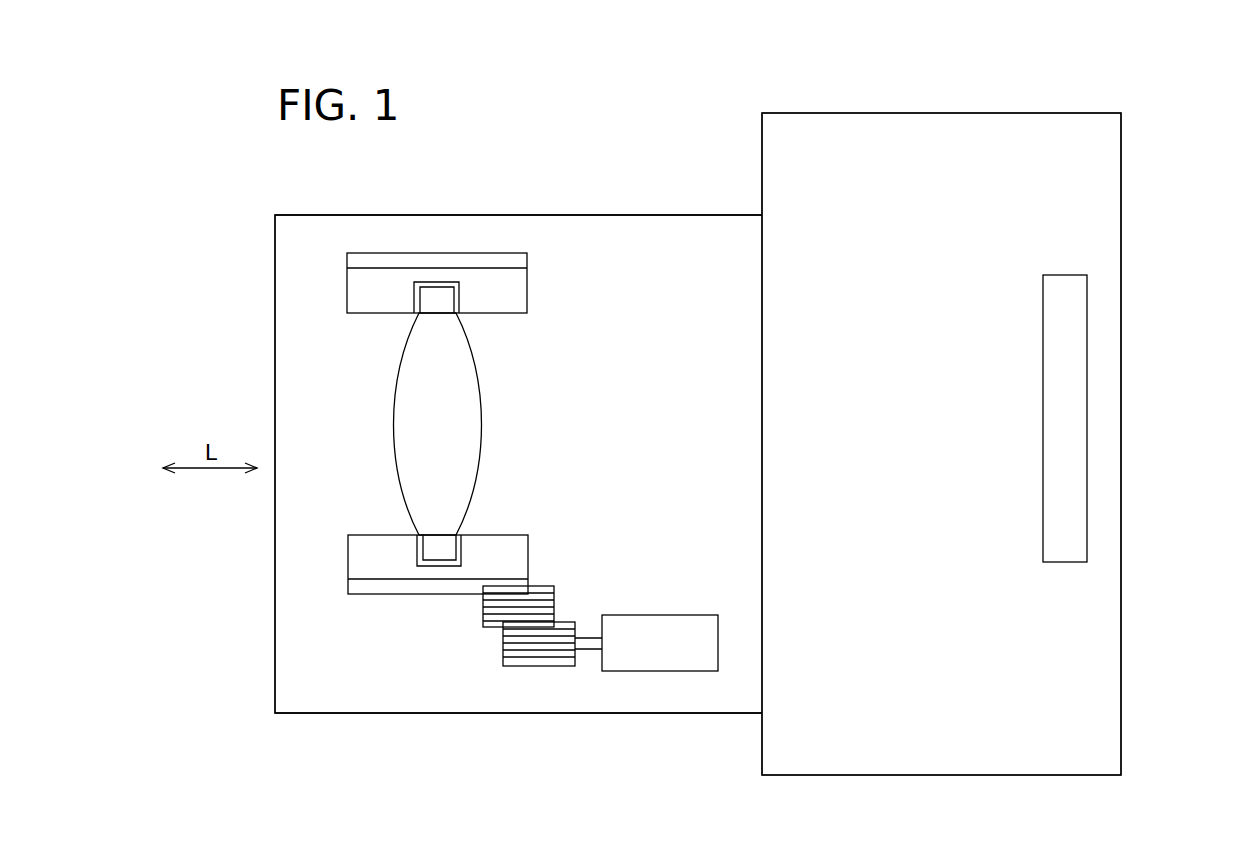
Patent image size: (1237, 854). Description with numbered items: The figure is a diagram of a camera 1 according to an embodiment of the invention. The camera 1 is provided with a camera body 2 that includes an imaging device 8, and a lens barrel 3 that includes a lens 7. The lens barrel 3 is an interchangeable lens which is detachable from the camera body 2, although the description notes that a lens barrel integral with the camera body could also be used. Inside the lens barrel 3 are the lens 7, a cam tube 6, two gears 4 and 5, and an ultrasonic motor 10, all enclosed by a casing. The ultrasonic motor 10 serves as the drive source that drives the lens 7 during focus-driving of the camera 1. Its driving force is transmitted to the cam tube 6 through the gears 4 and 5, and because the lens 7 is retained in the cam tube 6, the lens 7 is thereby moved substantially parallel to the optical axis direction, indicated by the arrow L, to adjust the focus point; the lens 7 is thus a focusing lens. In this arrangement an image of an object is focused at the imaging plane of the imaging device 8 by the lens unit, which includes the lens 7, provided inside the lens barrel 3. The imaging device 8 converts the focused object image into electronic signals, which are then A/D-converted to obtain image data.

The camera 1 is at (1172, 132).
The camera body 2 is at (976, 760).
The lens barrel 3 is at (670, 236).
The gear 4 is at (549, 656).
The gear 5 is at (494, 620).
The cam tube 6 is at (380, 588).
The lens 7 is at (470, 426).
The imaging device 8 is at (1053, 403).
The ultrasonic motor 10 is at (652, 628).